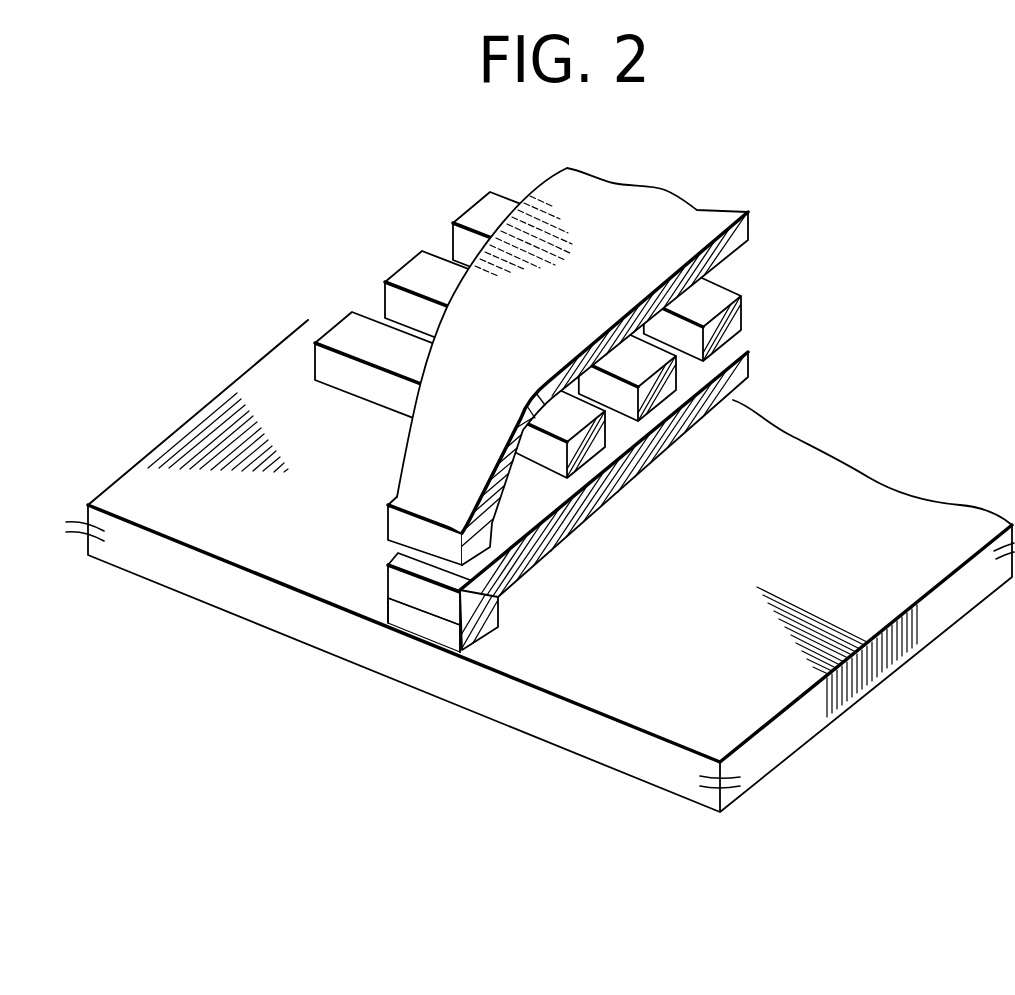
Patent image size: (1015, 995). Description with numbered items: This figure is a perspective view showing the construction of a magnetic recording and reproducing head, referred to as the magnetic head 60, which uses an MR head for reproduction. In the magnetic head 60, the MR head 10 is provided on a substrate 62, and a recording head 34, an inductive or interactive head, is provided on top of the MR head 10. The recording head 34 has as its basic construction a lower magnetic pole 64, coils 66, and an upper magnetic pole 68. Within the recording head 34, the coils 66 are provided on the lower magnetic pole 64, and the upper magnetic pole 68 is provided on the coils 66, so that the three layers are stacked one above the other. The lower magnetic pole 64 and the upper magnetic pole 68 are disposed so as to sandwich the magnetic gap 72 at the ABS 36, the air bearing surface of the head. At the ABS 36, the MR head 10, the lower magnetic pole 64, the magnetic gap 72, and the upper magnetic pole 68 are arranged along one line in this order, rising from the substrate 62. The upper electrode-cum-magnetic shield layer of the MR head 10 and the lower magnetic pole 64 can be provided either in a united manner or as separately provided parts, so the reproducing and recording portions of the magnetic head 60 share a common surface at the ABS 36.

The MR head 10 is at (372, 668).
The recording head 34 is at (657, 375).
The ABS 36 is at (430, 603).
The magnetic head 60 is at (540, 600).
The substrate 62 is at (607, 750).
The lower magnetic pole 64 is at (745, 368).
The coils 66 is at (722, 296).
The upper magnetic pole 68 is at (692, 210).
The magnetic gap 72 is at (390, 549).